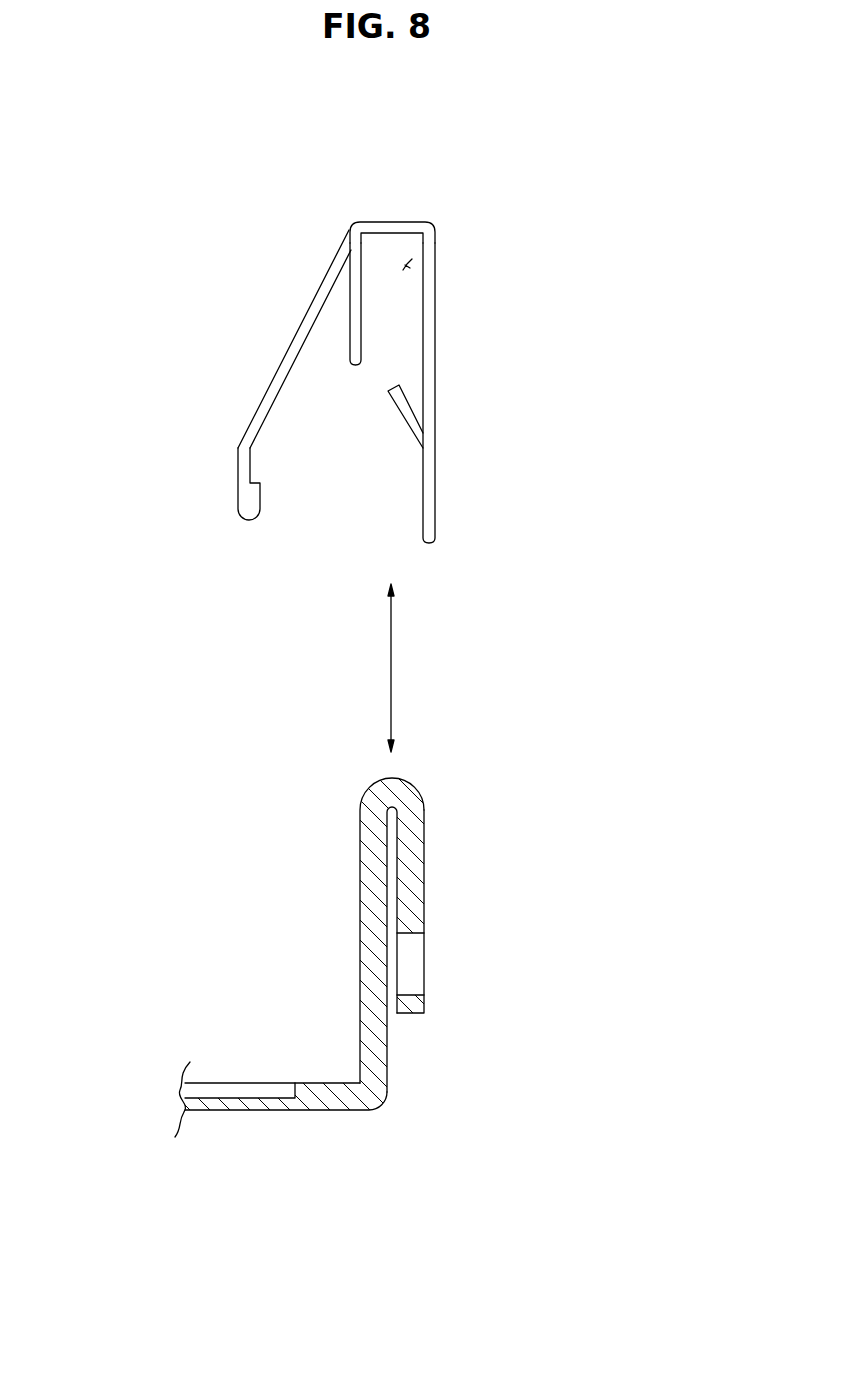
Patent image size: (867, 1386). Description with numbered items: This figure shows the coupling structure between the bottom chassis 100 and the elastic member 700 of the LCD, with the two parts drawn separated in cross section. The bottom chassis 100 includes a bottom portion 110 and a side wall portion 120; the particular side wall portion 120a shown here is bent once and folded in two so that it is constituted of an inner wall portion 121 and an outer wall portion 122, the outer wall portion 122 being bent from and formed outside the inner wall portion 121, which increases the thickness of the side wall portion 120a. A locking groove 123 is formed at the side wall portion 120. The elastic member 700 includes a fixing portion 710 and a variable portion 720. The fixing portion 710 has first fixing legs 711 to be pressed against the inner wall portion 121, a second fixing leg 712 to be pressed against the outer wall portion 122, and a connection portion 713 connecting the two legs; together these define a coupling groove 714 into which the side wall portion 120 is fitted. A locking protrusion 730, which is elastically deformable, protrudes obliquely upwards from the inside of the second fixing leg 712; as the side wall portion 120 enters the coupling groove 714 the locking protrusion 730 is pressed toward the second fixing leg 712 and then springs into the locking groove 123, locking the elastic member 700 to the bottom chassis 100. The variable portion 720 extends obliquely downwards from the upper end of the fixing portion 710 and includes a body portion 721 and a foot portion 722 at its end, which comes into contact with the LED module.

The elastic member 700 is at (488, 310).
The fixing portion 710 is at (563, 112).
The first fixing legs 711 is at (361, 270).
The second fixing leg 712 is at (435, 285).
The connection portion 713 is at (411, 222).
The coupling groove 714 is at (412, 260).
The variable portion 720 is at (122, 368).
The body portion 721 is at (278, 387).
The foot portion 722 is at (243, 465).
The locking protrusion 730 is at (407, 405).
The bottom chassis 100 is at (395, 1108).
The bottom portion 110 is at (312, 1100).
The side wall portion 120 is at (528, 935).
The side wall portion 120a is at (568, 810).
The inner wall portion 121 is at (370, 853).
The outer wall portion 122 is at (411, 897).
The locking groove 123 is at (411, 935).